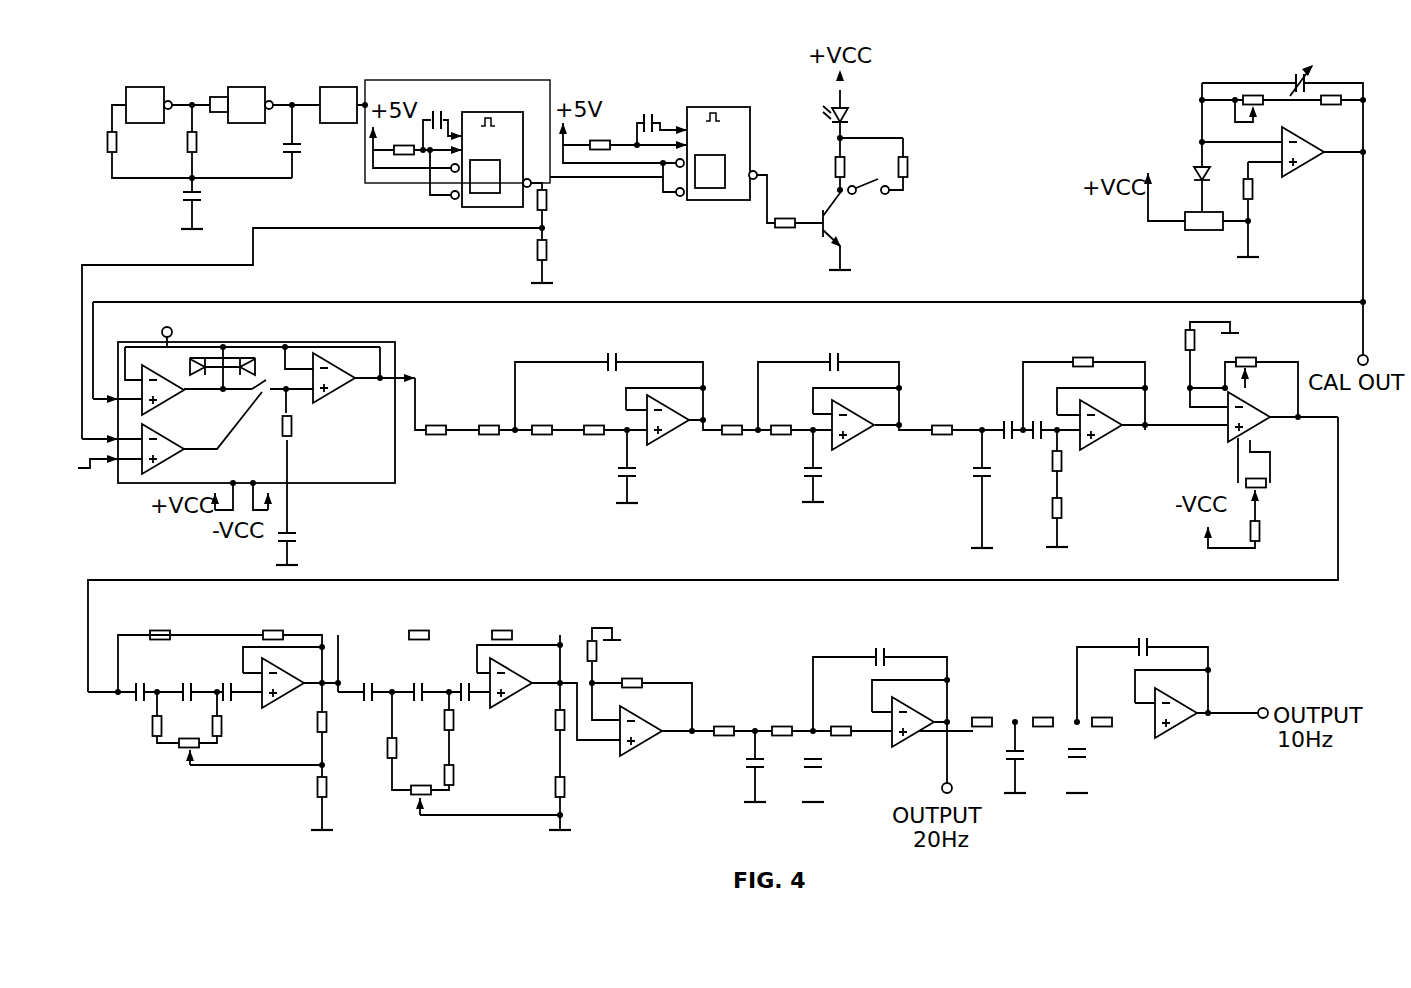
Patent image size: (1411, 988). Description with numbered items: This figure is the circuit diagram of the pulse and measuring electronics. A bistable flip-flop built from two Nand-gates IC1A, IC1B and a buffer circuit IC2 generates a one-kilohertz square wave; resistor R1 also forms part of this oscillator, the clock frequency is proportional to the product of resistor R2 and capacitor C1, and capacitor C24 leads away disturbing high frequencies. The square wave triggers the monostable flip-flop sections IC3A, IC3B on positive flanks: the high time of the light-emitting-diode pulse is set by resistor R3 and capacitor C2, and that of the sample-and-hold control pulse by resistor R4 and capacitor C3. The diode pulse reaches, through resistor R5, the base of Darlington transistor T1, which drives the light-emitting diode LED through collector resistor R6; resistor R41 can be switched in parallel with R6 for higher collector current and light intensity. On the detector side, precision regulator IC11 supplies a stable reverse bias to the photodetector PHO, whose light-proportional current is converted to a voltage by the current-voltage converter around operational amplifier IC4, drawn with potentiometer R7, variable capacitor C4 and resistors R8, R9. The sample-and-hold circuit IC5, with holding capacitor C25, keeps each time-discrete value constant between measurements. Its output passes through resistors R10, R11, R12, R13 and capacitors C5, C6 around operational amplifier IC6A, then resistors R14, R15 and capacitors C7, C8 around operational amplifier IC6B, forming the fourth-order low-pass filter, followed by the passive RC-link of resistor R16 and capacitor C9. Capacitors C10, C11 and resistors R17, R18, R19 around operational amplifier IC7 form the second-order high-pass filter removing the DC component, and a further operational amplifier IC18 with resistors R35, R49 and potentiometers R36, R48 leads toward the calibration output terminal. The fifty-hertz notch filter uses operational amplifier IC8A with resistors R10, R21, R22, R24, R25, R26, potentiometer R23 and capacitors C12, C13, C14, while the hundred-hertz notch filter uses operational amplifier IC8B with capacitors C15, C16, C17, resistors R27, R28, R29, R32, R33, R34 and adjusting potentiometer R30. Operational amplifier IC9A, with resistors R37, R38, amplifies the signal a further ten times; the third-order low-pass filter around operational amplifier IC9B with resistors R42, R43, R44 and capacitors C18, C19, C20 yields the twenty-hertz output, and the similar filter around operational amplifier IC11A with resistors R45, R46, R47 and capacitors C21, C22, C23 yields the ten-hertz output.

The Nand-gate IC1A is at (145, 90).
The Nand-gate IC1B is at (241, 90).
The buffer circuit IC2 is at (338, 90).
The resistor R1 is at (130, 142).
The resistor R2 is at (210, 142).
The capacitor C1 is at (309, 150).
The capacitor C24 is at (216, 197).
The resistor R4 is at (402, 138).
The capacitor C3 is at (429, 107).
The monostable flip-flop IC3A is at (496, 147).
The resistor R3 is at (608, 131).
The capacitor C2 is at (647, 107).
The monostable flip-flop IC3B is at (722, 142).
The resistor R5 is at (789, 210).
The Darlington transistor T1 is at (847, 230).
The light-emitting diode LED is at (859, 117).
The collector resistor R6 is at (857, 164).
The resistor R41 is at (899, 157).
The potentiometer R7 is at (1250, 93).
The variable capacitor C4 is at (1297, 70).
The resistor R8 is at (1334, 93).
The operational amplifier IC4 is at (1313, 146).
The photodetector PHO is at (1178, 162).
The precision regulator IC11 is at (1210, 237).
The resistor R9 is at (1267, 195).
The sample-and-hold circuit IC5 is at (266, 405).
The capacitor C25 is at (311, 539).
The resistor R10 is at (309, 520).
The resistor R11 is at (499, 417).
The resistor R12 is at (552, 417).
The resistor R13 is at (604, 417).
The capacitor C5 is at (611, 349).
The capacitor C6 is at (610, 474).
The operational amplifier IC6A is at (690, 432).
The resistor R14 is at (738, 417).
The resistor R15 is at (788, 417).
The capacitor C7 is at (834, 348).
The capacitor C8 is at (795, 475).
The operational amplifier IC6B is at (874, 436).
The resistor R16 is at (944, 419).
The capacitor C9 is at (966, 474).
The capacitor C10 is at (996, 418).
The capacitor C11 is at (1029, 448).
The resistor R17 is at (1093, 346).
The resistor R18 is at (1082, 469).
The resistor R19 is at (1082, 512).
The operational amplifier IC7 is at (1114, 436).
The resistor R35 is at (1166, 337).
The potentiometer R36 is at (1263, 347).
The operational amplifier IC18 is at (1276, 419).
The potentiometer R48 is at (1283, 489).
The resistor R49 is at (1280, 529).
The resistor R21 is at (283, 622).
The capacitor C12 is at (143, 678).
The capacitor C13 is at (191, 678).
The capacitor C14 is at (246, 705).
The resistor R22 is at (129, 729).
The potentiometer R23 is at (164, 757).
The resistor R24 is at (193, 729).
The operational amplifier IC8A is at (289, 705).
The resistor R25 is at (347, 722).
The resistor R26 is at (347, 789).
The capacitor C15 is at (371, 678).
The capacitor C16 is at (421, 678).
The capacitor C17 is at (479, 708).
The resistor R27 is at (431, 622).
The resistor R28 is at (514, 622).
The resistor R29 is at (417, 751).
The potentiometer R30 is at (399, 806).
The resistor R32 is at (474, 775).
The operational amplifier IC8B is at (522, 704).
The resistor R33 is at (570, 730).
The resistor R34 is at (589, 799).
The resistor R37 is at (617, 658).
The resistor R38 is at (654, 697).
The operational amplifier IC9A is at (661, 742).
The resistor R42 is at (734, 717).
The resistor R43 is at (791, 717).
The resistor R44 is at (851, 717).
The capacitor C18 is at (739, 778).
The capacitor C19 is at (834, 778).
The capacitor C20 is at (879, 639).
The operational amplifier IC9B is at (917, 747).
The resistor R45 is at (993, 709).
The resistor R46 is at (1049, 709).
The resistor R47 is at (1111, 709).
The capacitor C21 is at (997, 769).
The capacitor C22 is at (1097, 768).
The capacitor C23 is at (1139, 633).
The operational amplifier IC11A is at (1197, 729).